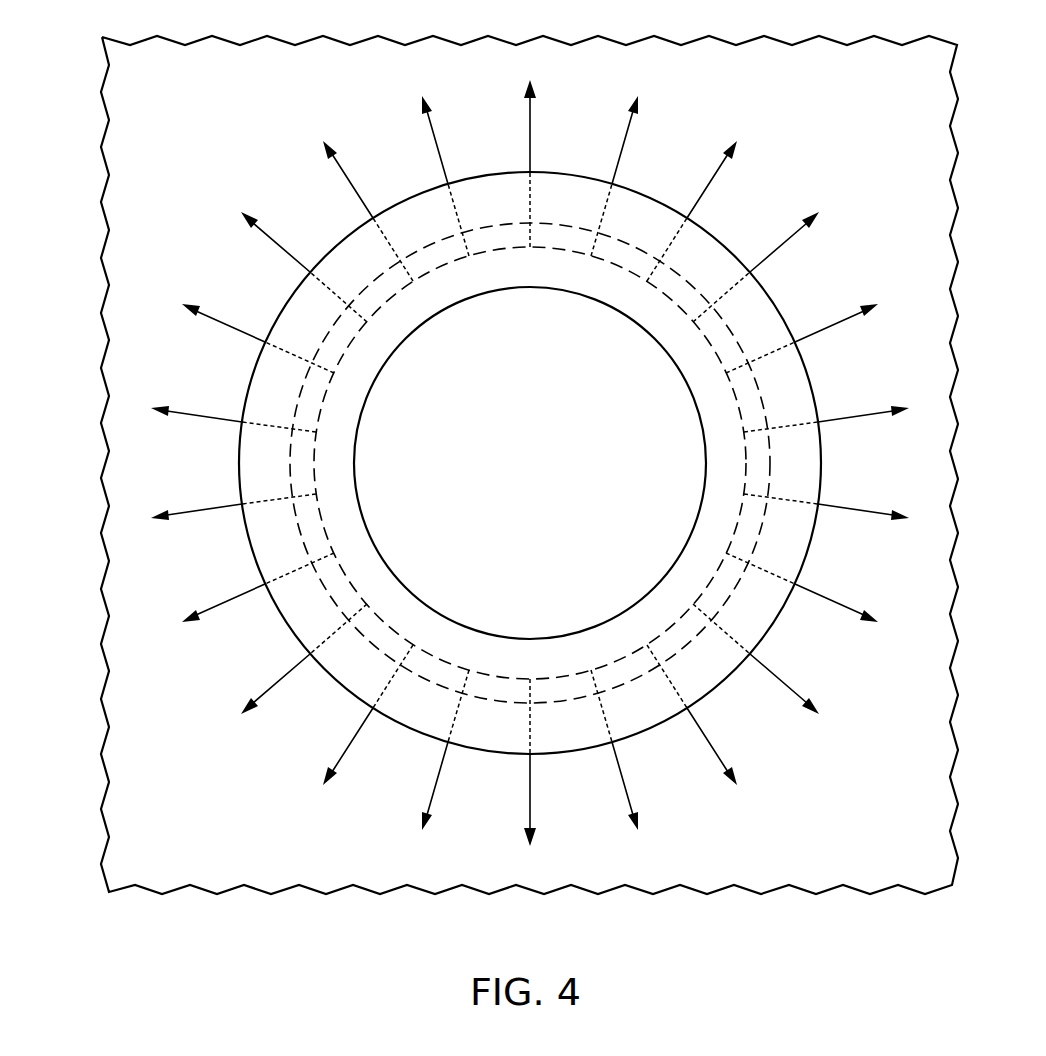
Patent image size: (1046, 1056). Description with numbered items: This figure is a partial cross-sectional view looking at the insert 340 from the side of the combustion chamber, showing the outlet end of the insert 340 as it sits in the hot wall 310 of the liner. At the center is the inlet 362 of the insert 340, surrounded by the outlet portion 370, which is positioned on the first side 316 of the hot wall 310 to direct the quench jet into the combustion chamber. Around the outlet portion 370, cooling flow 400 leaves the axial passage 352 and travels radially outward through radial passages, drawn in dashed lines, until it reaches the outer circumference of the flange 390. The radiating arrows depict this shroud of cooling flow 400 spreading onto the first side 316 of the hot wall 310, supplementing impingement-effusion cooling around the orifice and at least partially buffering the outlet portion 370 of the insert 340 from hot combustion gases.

The hot wall 310 is at (120, 782).
The first side of the hot wall 316 is at (198, 849).
The insert 340 is at (262, 175).
The axial passage 352 is at (622, 672).
The inlet 362 is at (553, 466).
The outlet portion 370 is at (500, 650).
The flange 390 is at (290, 620).
The cooling flow 400 is at (623, 148).